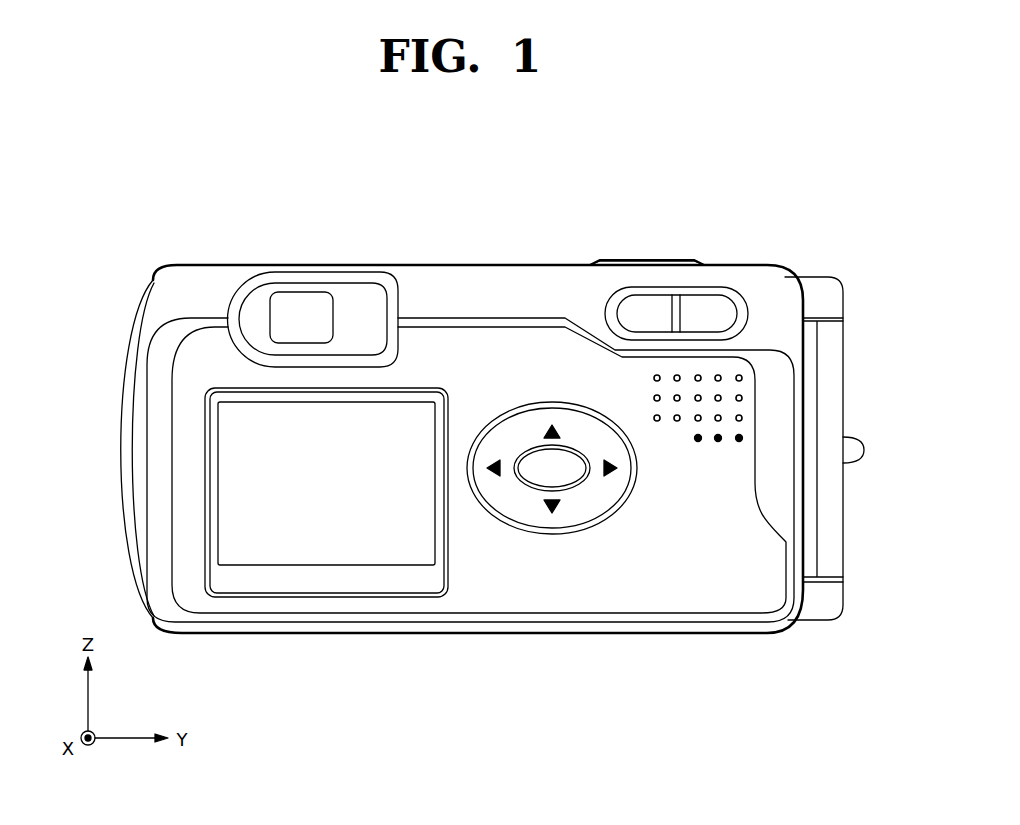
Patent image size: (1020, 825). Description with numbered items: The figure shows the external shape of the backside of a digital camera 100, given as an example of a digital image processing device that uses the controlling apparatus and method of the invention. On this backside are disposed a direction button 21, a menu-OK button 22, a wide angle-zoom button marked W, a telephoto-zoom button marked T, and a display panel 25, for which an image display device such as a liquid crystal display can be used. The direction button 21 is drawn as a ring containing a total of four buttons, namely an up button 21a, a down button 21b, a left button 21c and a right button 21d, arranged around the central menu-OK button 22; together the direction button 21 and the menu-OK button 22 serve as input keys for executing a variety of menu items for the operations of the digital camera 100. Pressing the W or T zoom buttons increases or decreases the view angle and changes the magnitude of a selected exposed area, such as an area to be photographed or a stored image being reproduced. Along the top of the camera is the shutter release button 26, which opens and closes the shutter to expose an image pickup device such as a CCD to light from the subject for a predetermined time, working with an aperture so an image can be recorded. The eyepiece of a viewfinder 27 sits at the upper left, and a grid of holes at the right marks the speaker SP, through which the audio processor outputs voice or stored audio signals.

The digital camera 100 is at (828, 228).
The viewfinder 27 is at (302, 303).
The shutter release button 26 is at (645, 262).
The display panel 25 is at (320, 545).
The speaker SP is at (743, 438).
The direction button 21 is at (578, 523).
The up button 21a is at (552, 426).
The down button 21b is at (555, 508).
The left button 21c is at (494, 466).
The right button 21d is at (656, 487).
The menu-OK button 22 is at (576, 476).